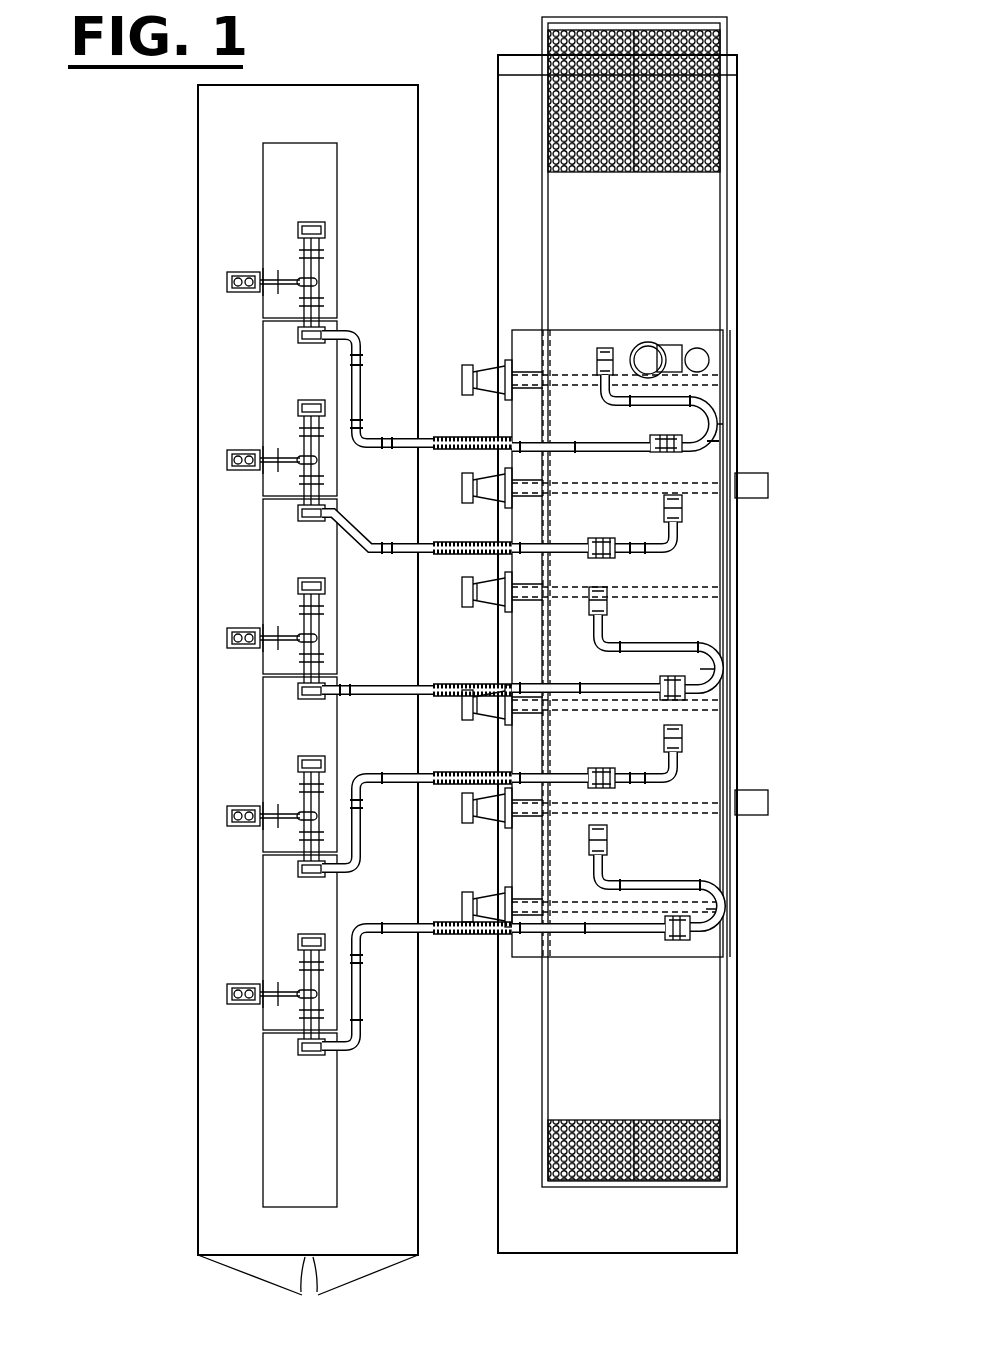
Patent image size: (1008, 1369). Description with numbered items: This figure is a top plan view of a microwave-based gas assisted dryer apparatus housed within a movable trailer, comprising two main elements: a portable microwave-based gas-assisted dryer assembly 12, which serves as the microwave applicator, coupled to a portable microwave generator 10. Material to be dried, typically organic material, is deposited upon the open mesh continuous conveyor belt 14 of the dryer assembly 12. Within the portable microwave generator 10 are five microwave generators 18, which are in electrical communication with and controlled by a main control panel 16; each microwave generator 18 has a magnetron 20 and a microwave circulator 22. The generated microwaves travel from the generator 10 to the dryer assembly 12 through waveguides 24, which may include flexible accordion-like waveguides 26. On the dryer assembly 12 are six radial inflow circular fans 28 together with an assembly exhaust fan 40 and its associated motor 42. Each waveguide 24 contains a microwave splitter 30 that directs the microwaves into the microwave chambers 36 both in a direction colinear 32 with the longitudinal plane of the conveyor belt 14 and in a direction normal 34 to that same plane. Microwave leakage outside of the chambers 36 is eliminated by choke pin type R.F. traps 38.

The portable microwave generator 10 is at (165, 252).
The microwave-based gas-assisted dryer assembly 12 is at (780, 245).
The open mesh continuous conveyor belt 14 is at (730, 50).
The main control panel 16 is at (324, 1143).
The microwave generator 18 is at (304, 221).
The magnetron 20 is at (261, 272).
The microwave circulator 22 is at (320, 284).
The waveguide 24 is at (365, 385).
The flexible accordion-like waveguide 26 is at (476, 440).
The radial inflow circular fan 28 is at (460, 380).
The microwave splitter 30 is at (620, 452).
The colinear direction 32 is at (606, 345).
The normal direction 34 is at (665, 438).
The microwave chamber 36 is at (720, 420).
The R.F. trap 38 is at (653, 263).
The assembly exhaust fan 40 is at (660, 343).
The motor 42 is at (700, 348).